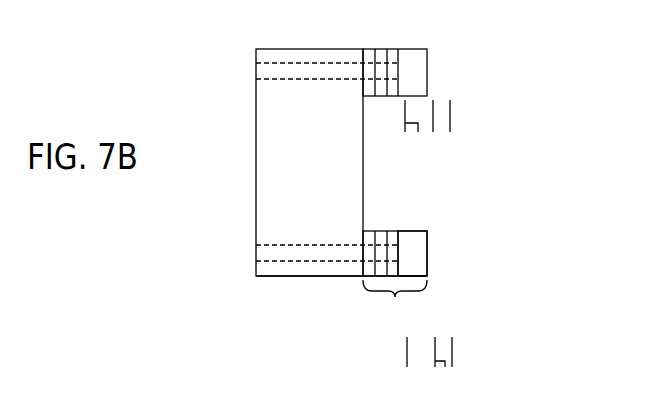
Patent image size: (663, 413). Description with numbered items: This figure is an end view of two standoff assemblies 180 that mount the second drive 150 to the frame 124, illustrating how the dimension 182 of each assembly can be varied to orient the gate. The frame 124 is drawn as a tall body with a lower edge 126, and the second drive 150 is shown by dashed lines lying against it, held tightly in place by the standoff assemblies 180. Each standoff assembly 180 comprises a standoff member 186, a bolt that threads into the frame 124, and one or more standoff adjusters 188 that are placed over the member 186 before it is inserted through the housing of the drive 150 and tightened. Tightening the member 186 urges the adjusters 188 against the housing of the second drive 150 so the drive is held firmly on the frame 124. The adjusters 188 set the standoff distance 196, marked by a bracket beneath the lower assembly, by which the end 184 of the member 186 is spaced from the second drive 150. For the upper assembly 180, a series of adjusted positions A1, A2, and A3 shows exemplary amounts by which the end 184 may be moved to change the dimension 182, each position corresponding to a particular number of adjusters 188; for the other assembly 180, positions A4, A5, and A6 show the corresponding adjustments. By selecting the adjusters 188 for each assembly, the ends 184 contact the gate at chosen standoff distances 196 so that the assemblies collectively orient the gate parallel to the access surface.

The frame 124 is at (252, 161).
The bottom edge 126 is at (262, 278).
The second drive 150 is at (266, 57).
The standoff assembly 180 is at (443, 47).
The dimension 182 is at (427, 38).
The end 184 is at (427, 68).
The standoff member 186 is at (413, 238).
The standoff adjusters 188 is at (369, 108).
The standoff distance 196 is at (395, 303).
The adjusted position A1 is at (415, 128).
The adjusted position A2 is at (443, 90).
The adjusted position A3 is at (450, 115).
The adjusted position A4 is at (407, 352).
The adjusted position A5 is at (444, 363).
The adjusted position A6 is at (452, 352).